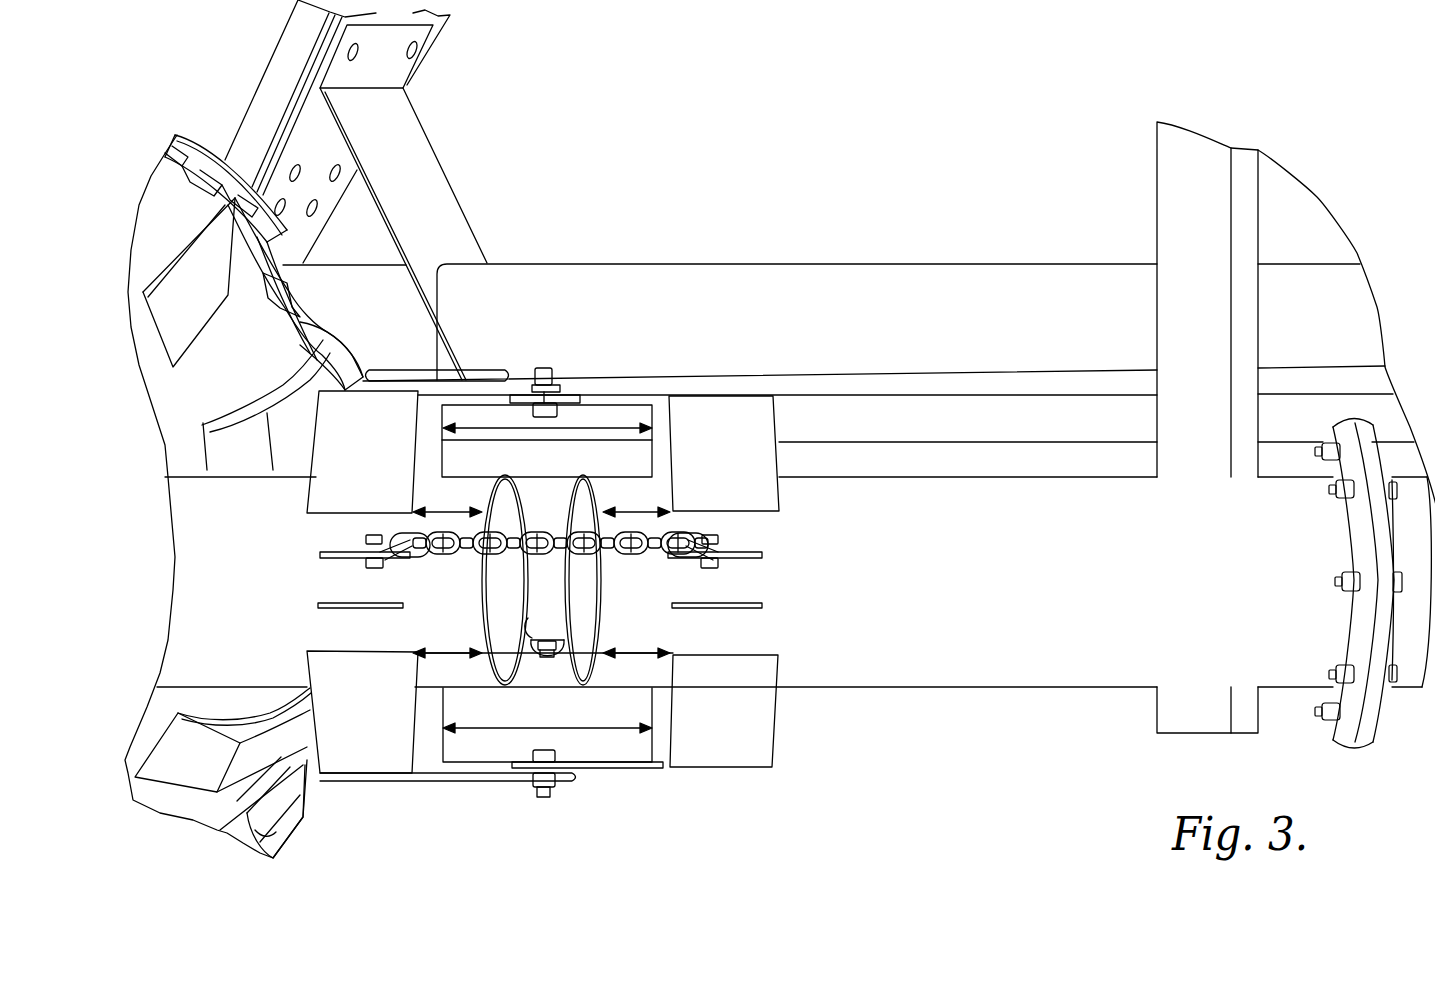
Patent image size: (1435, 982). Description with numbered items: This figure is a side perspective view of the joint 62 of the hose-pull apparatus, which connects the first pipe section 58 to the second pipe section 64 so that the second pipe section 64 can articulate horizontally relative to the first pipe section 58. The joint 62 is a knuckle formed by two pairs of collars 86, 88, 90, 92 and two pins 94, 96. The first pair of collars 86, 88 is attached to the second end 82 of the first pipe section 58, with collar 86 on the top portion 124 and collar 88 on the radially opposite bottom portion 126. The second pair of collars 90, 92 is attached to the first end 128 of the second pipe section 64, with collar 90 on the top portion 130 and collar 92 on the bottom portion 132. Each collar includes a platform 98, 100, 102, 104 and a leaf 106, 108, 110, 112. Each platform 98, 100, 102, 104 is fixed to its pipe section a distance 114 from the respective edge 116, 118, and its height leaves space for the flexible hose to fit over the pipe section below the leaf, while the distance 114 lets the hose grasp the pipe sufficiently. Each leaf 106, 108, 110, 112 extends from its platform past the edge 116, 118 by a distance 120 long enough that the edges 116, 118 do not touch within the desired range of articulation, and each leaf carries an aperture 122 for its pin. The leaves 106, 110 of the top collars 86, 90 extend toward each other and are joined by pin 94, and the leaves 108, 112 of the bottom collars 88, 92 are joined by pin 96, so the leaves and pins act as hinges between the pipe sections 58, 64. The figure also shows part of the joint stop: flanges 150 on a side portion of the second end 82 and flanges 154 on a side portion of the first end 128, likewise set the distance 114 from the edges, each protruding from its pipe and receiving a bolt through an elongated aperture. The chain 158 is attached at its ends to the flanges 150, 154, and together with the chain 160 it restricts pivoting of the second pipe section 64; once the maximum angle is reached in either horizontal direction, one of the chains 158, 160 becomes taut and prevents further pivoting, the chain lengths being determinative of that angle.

The first pipe section 58 is at (1105, 479).
The joint 62 is at (583, 238).
The second pipe section 64 is at (202, 498).
The second end 82 is at (972, 688).
The collar 86 is at (750, 410).
The collar 88 is at (737, 762).
The collar 90 is at (388, 405).
The collar 92 is at (345, 775).
The pin 94 is at (541, 366).
The pin 96 is at (540, 800).
The platform 98 is at (800, 442).
The platform 100 is at (765, 738).
The platform 102 is at (440, 448).
The platform 104 is at (331, 665).
The leaf 106 is at (640, 403).
The leaf 108 is at (652, 763).
The leaf 110 is at (472, 388).
The leaf 112 is at (478, 777).
The distance 114 is at (445, 512).
The edge 116 is at (584, 505).
The edge 118 is at (481, 565).
The distance 120 is at (600, 428).
The aperture 122 is at (556, 385).
The top portion 124 is at (907, 492).
The bottom portion 126 is at (803, 665).
The first end 128 is at (307, 535).
The top portion 130 is at (282, 495).
The bottom portion 132 is at (253, 670).
The flange 150 is at (762, 606).
The flange 154 is at (318, 605).
The chain 158 is at (680, 537).
The chain 160 is at (546, 658).